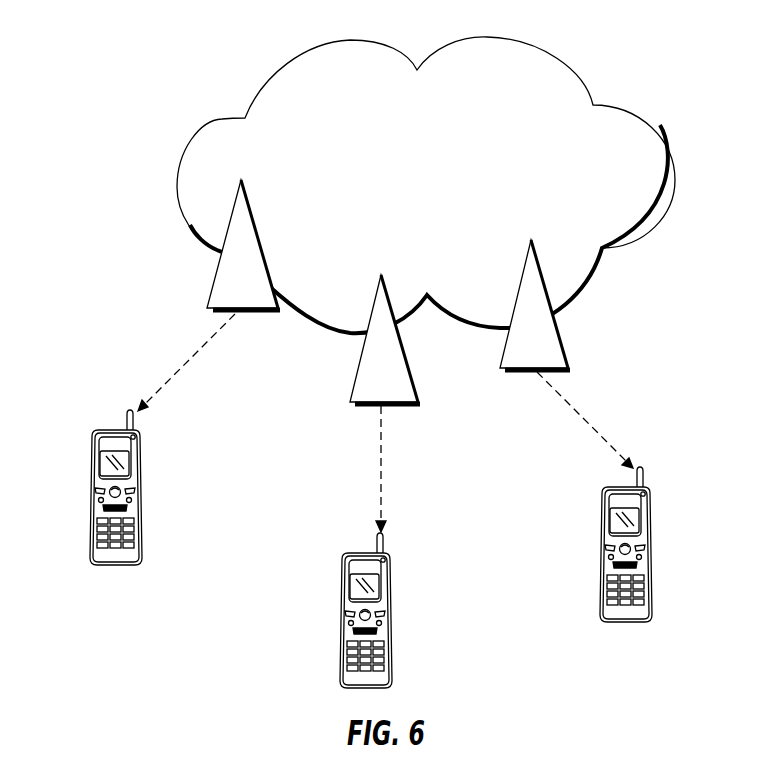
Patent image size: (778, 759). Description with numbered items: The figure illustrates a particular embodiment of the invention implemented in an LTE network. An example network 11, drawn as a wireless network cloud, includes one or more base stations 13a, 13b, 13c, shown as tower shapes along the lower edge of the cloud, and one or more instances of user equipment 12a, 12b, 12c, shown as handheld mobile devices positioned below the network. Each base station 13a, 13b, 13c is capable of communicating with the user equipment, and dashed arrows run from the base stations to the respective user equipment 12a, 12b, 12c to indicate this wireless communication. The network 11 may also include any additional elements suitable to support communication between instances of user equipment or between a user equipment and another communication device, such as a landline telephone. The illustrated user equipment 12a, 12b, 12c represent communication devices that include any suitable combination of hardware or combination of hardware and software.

The network 11 is at (583, 82).
The base station 13a is at (210, 290).
The base station 13b is at (350, 392).
The base station 13c is at (500, 363).
The user equipment 12a is at (85, 527).
The user equipment 12b is at (335, 650).
The user equipment 12c is at (597, 585).